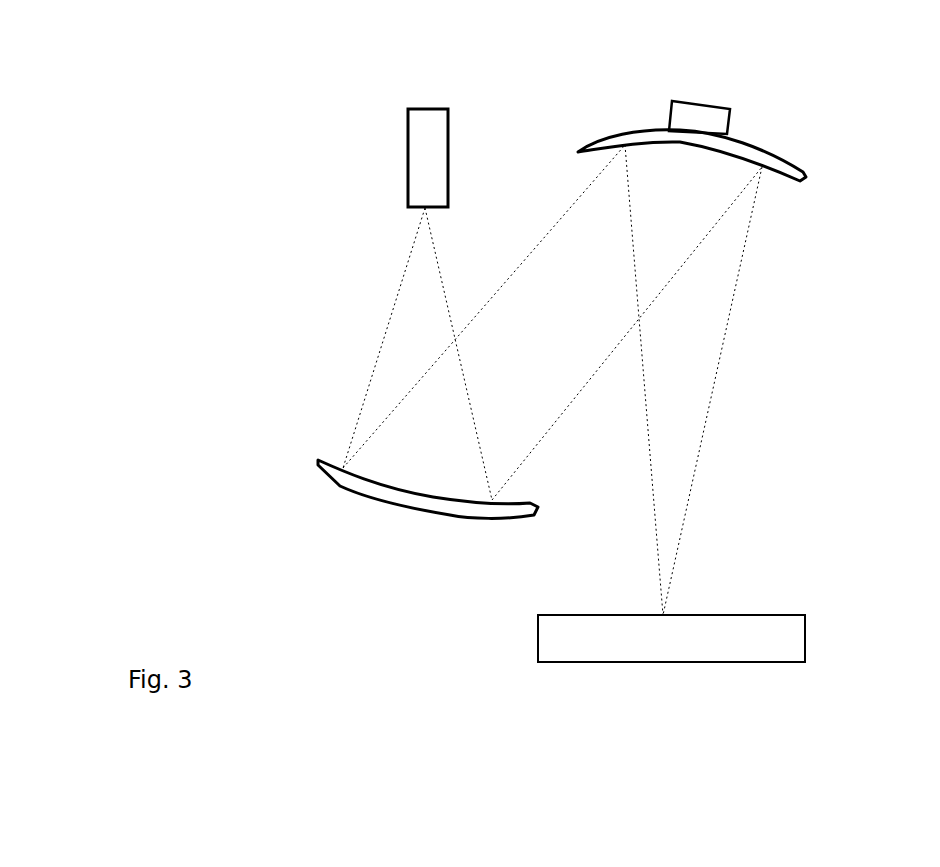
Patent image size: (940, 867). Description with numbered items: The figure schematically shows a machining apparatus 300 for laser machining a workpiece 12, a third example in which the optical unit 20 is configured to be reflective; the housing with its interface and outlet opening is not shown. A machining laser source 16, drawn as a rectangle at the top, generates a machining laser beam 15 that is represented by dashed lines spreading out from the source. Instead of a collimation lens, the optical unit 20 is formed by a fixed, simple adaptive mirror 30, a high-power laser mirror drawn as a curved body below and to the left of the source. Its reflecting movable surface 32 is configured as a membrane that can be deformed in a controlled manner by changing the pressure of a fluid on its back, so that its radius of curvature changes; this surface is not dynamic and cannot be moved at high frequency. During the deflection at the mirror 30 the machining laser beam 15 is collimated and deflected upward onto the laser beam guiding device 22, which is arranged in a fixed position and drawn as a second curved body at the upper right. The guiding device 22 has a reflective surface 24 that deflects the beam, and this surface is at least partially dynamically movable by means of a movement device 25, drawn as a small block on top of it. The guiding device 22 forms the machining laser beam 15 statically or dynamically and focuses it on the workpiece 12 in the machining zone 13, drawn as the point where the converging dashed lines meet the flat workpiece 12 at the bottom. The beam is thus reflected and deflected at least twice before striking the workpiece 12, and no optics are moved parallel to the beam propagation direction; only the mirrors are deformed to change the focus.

The machining apparatus 300 is at (200, 135).
The machining laser source 16 is at (408, 130).
The machining laser beam 15 is at (397, 340).
The reflecting movable surface 32 is at (415, 495).
The optical unit 20 is at (415, 549).
The simple adaptive mirror 30 is at (352, 497).
The laser beam guiding device 22 is at (744, 193).
The reflective surface 24 is at (698, 155).
The movement device 25 is at (730, 122).
The machining zone 13 is at (683, 603).
The workpiece 12 is at (675, 662).